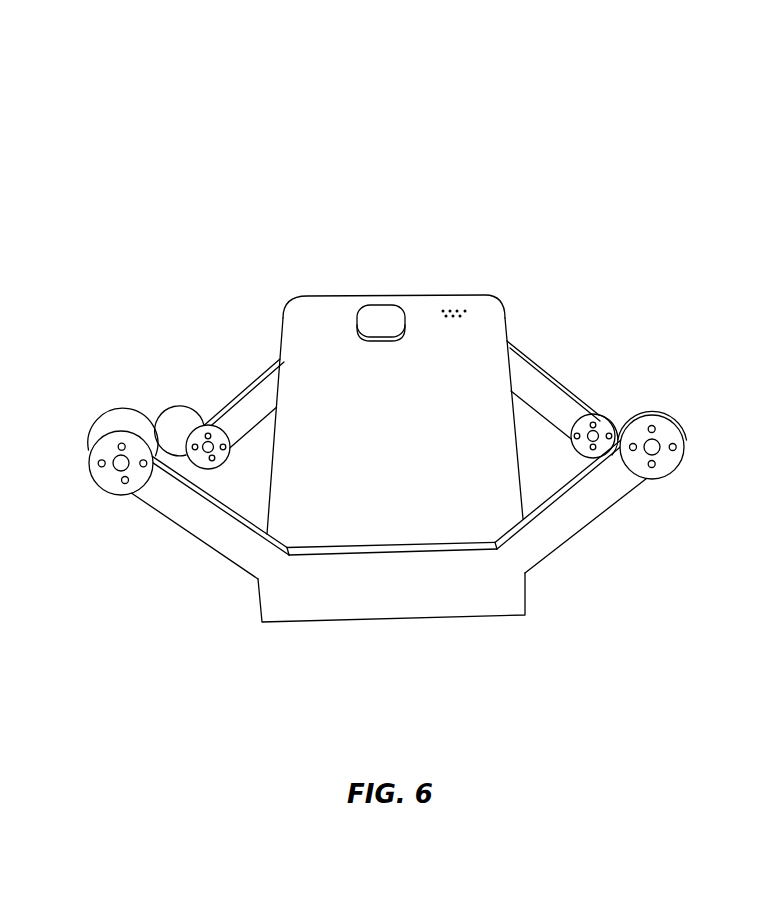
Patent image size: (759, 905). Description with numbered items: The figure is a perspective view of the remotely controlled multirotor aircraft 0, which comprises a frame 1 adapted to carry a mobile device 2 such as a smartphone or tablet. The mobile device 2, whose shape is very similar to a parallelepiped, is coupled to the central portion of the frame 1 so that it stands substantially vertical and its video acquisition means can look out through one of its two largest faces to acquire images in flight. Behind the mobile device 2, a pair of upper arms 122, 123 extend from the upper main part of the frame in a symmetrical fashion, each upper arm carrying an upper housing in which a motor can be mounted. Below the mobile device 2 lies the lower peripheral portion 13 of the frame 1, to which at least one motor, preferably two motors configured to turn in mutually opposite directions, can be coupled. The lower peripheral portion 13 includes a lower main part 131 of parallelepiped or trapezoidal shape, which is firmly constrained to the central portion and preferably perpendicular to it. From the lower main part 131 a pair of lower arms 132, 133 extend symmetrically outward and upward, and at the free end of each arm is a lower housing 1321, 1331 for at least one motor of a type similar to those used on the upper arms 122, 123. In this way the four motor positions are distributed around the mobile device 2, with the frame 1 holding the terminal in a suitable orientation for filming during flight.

The remotely controlled multirotor aircraft 0 is at (526, 138).
The frame 1 is at (203, 224).
The mobile device 2 is at (312, 317).
The lower peripheral portion 13 is at (398, 625).
The lower main part 131 is at (458, 590).
The lower arm 132 is at (577, 512).
The lower arm 133 is at (236, 540).
The lower housing 1321 is at (668, 433).
The lower housing 1331 is at (110, 447).
The upper arm 122 is at (540, 388).
The upper arm 123 is at (257, 390).